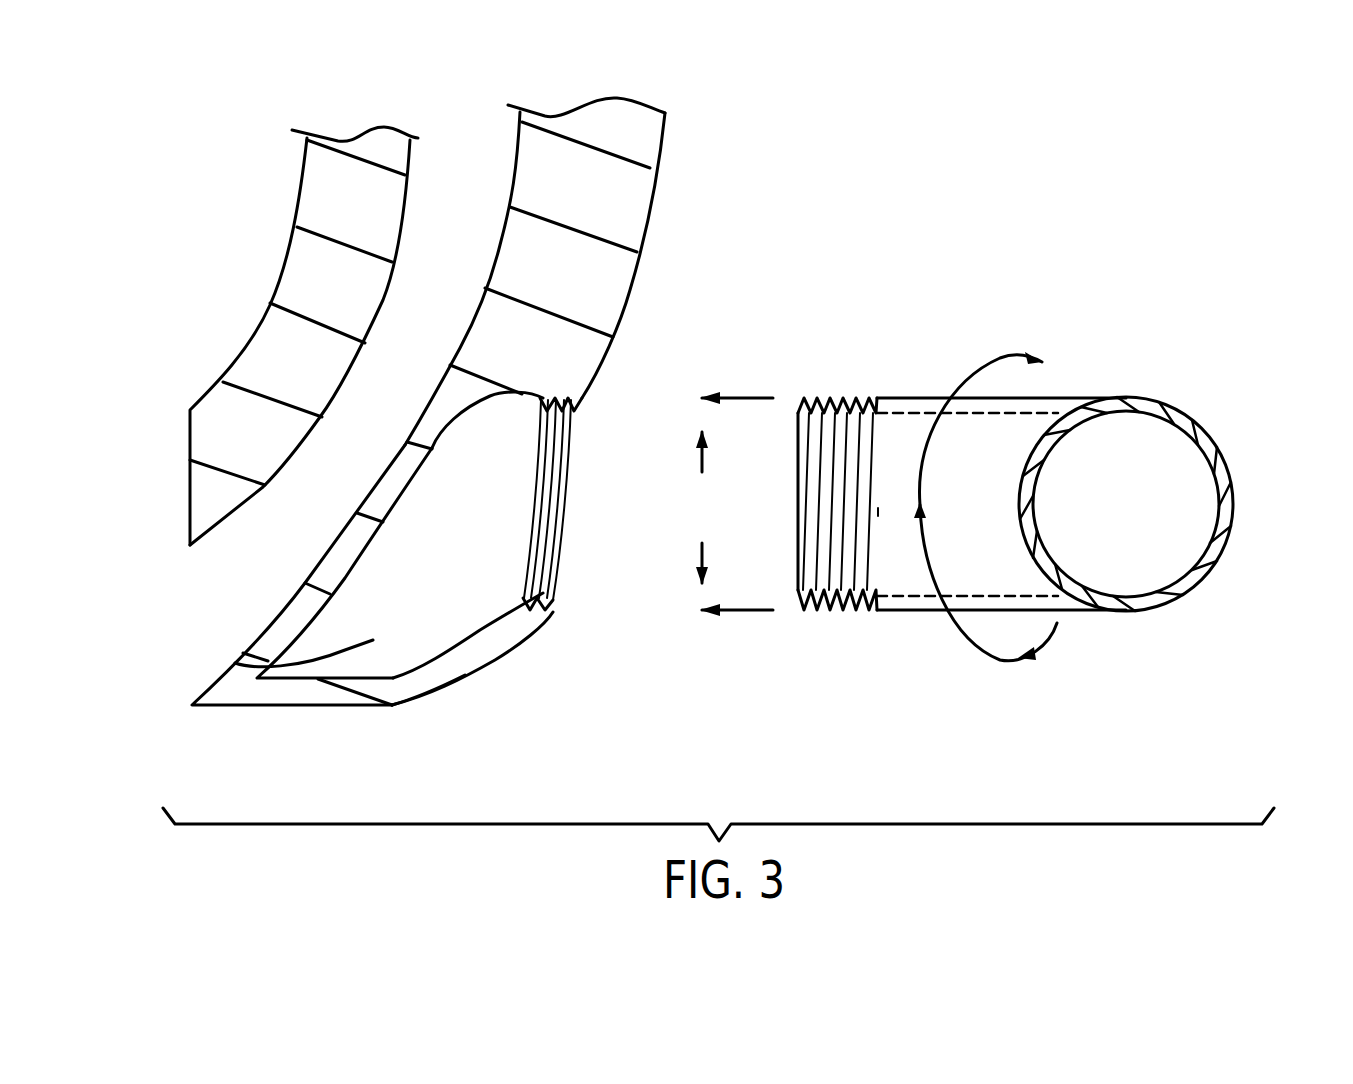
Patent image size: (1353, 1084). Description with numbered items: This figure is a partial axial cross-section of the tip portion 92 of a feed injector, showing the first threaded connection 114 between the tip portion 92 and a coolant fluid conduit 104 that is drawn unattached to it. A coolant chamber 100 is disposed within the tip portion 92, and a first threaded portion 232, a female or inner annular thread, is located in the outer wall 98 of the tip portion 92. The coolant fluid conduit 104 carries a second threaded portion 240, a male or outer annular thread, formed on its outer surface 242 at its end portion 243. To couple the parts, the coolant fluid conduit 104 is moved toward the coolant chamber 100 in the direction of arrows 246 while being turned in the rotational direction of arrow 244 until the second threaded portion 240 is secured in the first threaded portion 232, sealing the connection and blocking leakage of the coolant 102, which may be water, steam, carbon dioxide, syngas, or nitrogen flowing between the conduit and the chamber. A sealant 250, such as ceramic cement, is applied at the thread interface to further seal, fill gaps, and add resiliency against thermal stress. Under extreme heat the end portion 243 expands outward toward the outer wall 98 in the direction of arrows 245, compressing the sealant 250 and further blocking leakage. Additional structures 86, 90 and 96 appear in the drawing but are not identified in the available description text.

The first wall 86 is at (248, 343).
The second wall 90 is at (643, 237).
The tip portion 92 is at (447, 693).
The wall portion 96 is at (287, 603).
The outer wall 98 is at (528, 642).
The coolant chamber 100 is at (237, 664).
The coolant 102 is at (1167, 467).
The coolant fluid conduit 104 is at (1230, 505).
The first threaded connection 114 is at (760, 663).
The first threaded portion 232 is at (533, 590).
The second threaded portion 240 is at (816, 611).
The outer surface 242 is at (890, 398).
The end portion 243 is at (923, 612).
The arrow 244 is at (985, 355).
The arrows 245 is at (737, 557).
The arrows 246 is at (770, 637).
The sealant 250 is at (543, 425).